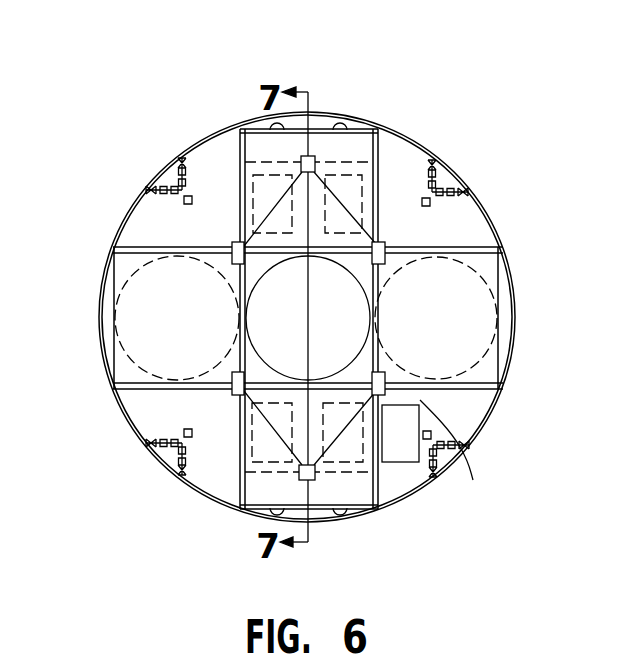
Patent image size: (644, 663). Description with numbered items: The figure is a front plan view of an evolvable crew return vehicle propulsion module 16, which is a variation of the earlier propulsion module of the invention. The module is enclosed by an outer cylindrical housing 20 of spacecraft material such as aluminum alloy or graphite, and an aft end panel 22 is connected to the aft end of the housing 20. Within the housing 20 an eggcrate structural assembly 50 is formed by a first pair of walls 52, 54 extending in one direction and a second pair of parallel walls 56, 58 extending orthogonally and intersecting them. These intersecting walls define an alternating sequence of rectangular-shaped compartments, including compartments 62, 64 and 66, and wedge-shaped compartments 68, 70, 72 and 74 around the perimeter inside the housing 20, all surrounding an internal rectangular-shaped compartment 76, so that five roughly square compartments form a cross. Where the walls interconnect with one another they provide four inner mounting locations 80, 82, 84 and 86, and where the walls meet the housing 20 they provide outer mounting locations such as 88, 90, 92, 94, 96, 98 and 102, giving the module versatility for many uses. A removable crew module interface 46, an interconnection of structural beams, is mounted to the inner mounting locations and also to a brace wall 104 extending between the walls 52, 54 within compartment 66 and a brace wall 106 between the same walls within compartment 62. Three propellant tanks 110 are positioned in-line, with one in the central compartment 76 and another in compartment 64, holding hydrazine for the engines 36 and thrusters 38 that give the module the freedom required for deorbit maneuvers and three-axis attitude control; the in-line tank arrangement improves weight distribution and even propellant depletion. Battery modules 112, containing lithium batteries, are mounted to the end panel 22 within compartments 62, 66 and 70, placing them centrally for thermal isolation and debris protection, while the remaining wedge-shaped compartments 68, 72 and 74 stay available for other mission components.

The evolvable CRV propulsion module 16 is at (548, 72).
The outer cylindrical housing 20 is at (168, 150).
The aft end panel 22 is at (392, 143).
The engines 36 is at (338, 120).
The thrusters 38 is at (460, 468).
The crew module interface 46 is at (465, 208).
The eggcrate structural assembly 50 is at (382, 237).
The first wall 52 is at (238, 173).
The first wall 54 is at (336, 257).
The second parallel wall 56 is at (163, 248).
The second parallel wall 58 is at (160, 393).
The rectangular-shaped compartment 62 is at (353, 490).
The rectangular-shaped compartment 64 is at (490, 268).
The rectangular-shaped compartment 66 is at (322, 140).
The wedge-shaped compartment 68 is at (198, 477).
The wedge-shaped compartment 70 is at (468, 410).
The wedge-shaped compartment 72 is at (482, 207).
The wedge-shaped compartment 74 is at (155, 205).
The internal rectangular-shaped compartment 76 is at (383, 265).
The inner mounting location 80 is at (463, 452).
The inner mounting location 82 is at (483, 239).
The inner mounting location 84 is at (234, 242).
The inner mounting location 86 is at (232, 393).
The outer mounting location 88 is at (243, 510).
The outer mounting location 90 is at (369, 478).
The outer mounting location 92 is at (503, 389).
The outer mounting location 94 is at (458, 262).
The outer mounting location 96 is at (378, 127).
The outer mounting location 98 is at (240, 130).
The outer mounting location 102 is at (113, 390).
The brace wall 104 is at (253, 175).
The brace wall 106 is at (253, 505).
The propellant tanks 110 is at (370, 167).
The battery modules 112 is at (408, 474).